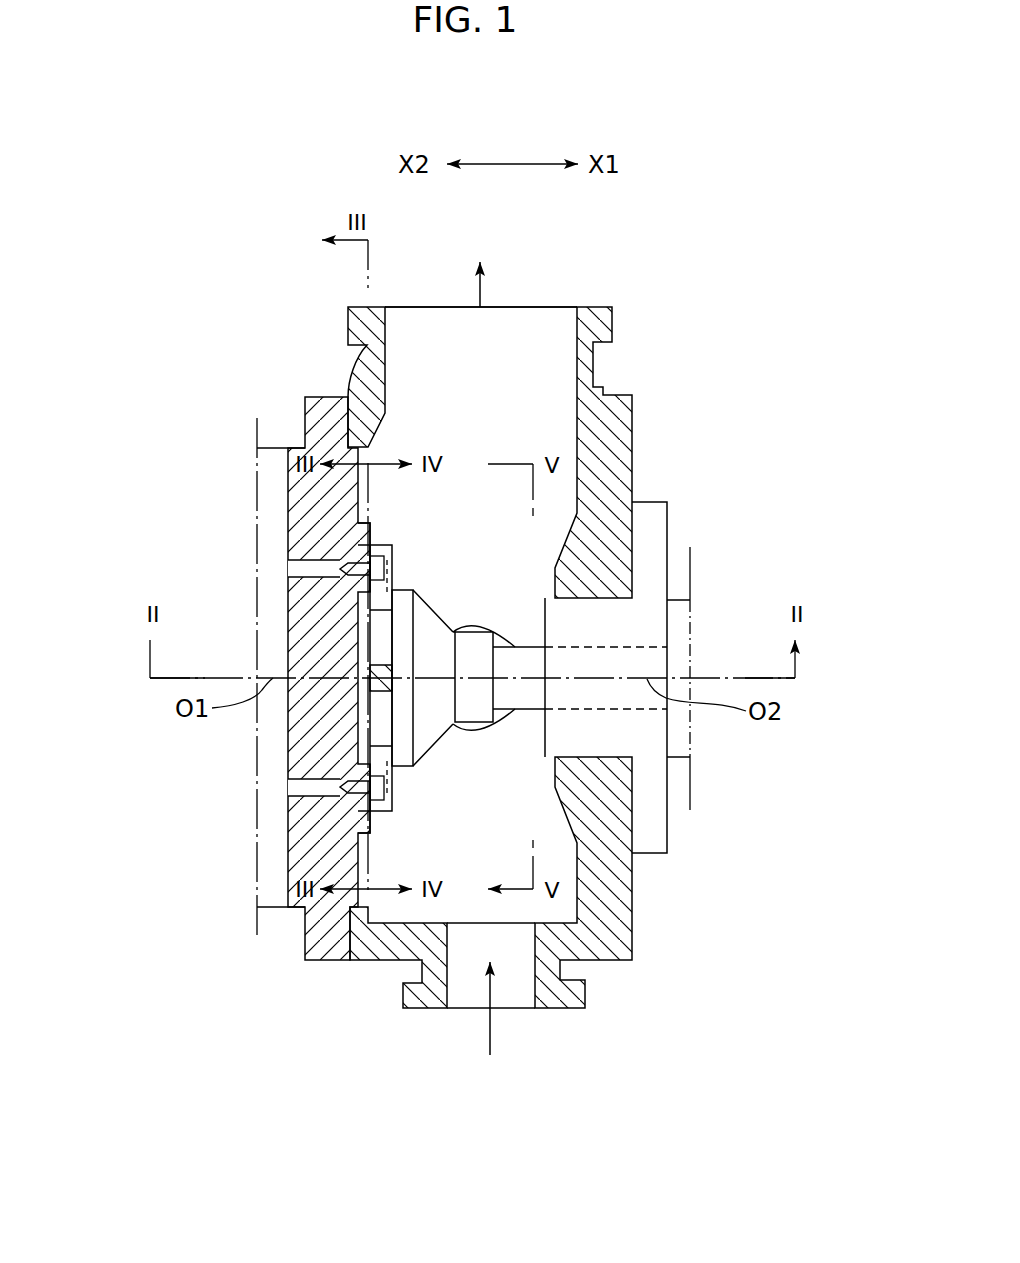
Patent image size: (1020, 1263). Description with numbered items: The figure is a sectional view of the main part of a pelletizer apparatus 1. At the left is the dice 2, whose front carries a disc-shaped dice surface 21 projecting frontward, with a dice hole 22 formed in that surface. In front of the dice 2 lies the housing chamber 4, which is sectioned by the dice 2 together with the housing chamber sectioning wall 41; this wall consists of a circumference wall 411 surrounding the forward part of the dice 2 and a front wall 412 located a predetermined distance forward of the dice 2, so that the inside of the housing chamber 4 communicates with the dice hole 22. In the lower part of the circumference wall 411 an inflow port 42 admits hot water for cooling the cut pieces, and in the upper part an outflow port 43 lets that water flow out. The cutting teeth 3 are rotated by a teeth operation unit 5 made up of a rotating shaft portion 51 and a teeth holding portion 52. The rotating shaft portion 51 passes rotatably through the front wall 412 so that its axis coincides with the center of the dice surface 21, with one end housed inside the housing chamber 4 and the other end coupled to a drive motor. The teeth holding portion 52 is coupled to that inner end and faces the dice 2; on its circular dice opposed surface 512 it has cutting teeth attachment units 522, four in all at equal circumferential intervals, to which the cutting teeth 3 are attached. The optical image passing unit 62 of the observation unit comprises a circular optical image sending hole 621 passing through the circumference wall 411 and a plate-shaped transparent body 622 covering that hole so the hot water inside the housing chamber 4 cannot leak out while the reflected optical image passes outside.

The pelletizer apparatus 1 is at (690, 280).
The dice 2 is at (320, 395).
The dice surface 21 is at (368, 522).
The dice hole 22 is at (375, 557).
The cutting teeth 3 is at (388, 580).
The housing chamber 4 is at (530, 383).
The housing chamber sectioning wall 41 is at (738, 908).
The circumference wall 411 is at (585, 960).
The front wall 412 is at (633, 927).
The inflow port 42 is at (513, 995).
The outflow port 43 is at (546, 307).
The teeth operation unit 5 is at (535, 785).
The rotating shaft portion 51 is at (540, 709).
The dice opposed surface 512 is at (390, 718).
The teeth holding portion 52 is at (438, 734).
The cutting teeth attachment unit 522 is at (415, 592).
The optical image passing unit 62 is at (545, 537).
The optical image sending hole 621 is at (485, 622).
The transparent body 622 is at (502, 640).